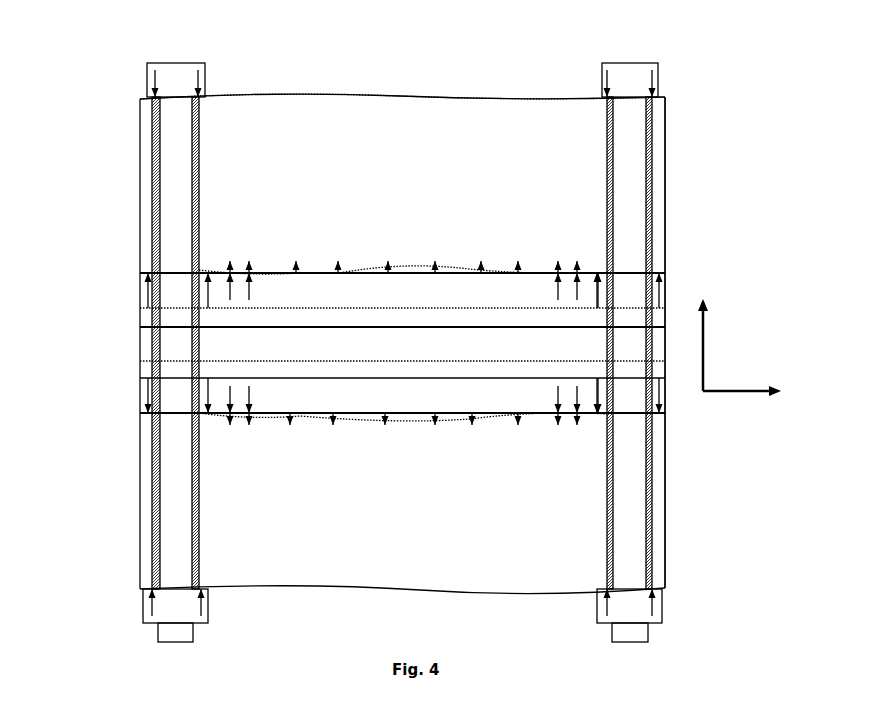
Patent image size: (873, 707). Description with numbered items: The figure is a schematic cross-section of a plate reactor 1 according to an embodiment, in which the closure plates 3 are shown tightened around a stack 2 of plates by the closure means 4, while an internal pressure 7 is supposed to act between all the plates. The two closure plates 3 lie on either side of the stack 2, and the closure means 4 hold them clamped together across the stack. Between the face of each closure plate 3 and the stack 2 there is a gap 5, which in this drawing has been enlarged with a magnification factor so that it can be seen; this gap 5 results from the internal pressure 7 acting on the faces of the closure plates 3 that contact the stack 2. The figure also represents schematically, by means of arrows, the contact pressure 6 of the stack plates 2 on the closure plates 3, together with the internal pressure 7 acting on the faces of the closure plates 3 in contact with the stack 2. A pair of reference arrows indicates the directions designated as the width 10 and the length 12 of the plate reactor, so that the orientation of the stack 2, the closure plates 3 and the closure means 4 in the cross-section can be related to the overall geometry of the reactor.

The assembly 1 is at (733, 95).
The stack 2 is at (125, 343).
The closure plates 3 is at (348, 115).
The closure means 4 is at (153, 73).
The gap 5 is at (410, 263).
The contact pressure 6 is at (143, 290).
The internal pressure 7 is at (225, 267).
The width 10 is at (752, 400).
The length 12 is at (708, 316).